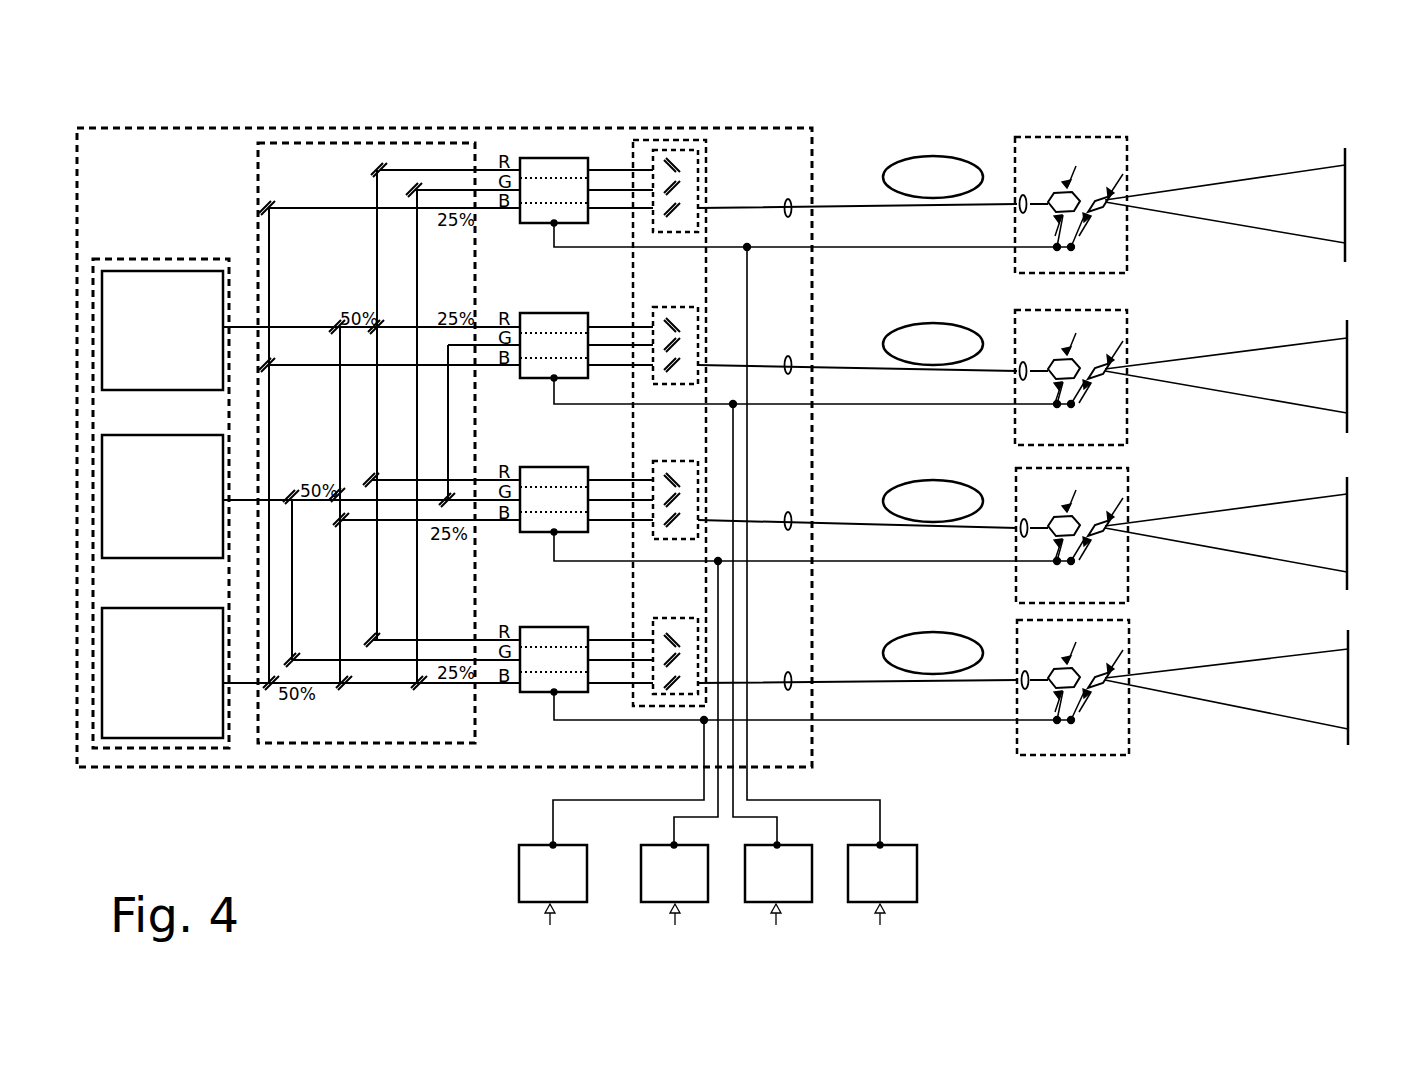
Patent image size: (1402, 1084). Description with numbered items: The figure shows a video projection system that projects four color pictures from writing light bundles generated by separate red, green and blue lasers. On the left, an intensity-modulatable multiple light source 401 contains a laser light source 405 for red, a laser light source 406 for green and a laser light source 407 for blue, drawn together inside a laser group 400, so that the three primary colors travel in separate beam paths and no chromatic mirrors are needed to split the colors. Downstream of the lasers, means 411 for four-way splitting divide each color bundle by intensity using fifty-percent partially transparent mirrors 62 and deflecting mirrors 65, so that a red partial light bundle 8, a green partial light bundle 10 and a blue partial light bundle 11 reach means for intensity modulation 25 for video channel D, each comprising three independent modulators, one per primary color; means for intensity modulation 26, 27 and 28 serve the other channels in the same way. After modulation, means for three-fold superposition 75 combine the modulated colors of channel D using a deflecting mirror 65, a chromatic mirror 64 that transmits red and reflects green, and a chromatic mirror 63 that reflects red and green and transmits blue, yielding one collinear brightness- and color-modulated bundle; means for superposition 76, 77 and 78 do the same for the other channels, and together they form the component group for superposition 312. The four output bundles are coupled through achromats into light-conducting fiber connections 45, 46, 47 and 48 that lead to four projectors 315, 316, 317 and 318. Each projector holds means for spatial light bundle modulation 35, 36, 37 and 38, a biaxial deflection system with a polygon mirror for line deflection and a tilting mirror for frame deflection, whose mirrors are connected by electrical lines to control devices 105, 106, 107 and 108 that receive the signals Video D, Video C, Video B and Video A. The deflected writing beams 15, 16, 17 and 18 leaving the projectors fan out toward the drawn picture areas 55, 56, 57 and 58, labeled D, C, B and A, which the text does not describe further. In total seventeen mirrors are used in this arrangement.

The laser light source unit 400 is at (140, 259).
The laser light source 405 is at (174, 330).
The laser light source 406 is at (175, 496).
The laser light source 407 is at (174, 673).
The means for four-way splitting 411 is at (280, 143).
The multiple light source 401 is at (815, 147).
The red partial light bundle 8 is at (453, 169).
The green partial light bundle 10 is at (490, 189).
The blue partial light bundle 11 is at (489, 210).
The means for intensity modulation 25 is at (524, 224).
The means for intensity modulation 26 is at (524, 379).
The means for intensity modulation 27 is at (524, 533).
The means for intensity modulation 28 is at (524, 693).
The partially transparent mirror 62 is at (445, 497).
The deflecting mirror 65 is at (413, 193).
The chromatic mirror 64 is at (684, 187).
The chromatic mirror 63 is at (684, 210).
The component group for superposition 312 is at (706, 152).
The means for three-fold superposition 75 is at (655, 233).
The means for superposition 76 is at (655, 385).
The means for superposition 77 is at (655, 540).
The means for superposition 78 is at (655, 695).
The light-conducting fiber connection 45 is at (936, 158).
The light-conducting fiber connection 46 is at (936, 325).
The light-conducting fiber connection 47 is at (936, 481).
The light-conducting fiber connection 48 is at (936, 633).
The projector 315 is at (1126, 150).
The projector 316 is at (1126, 323).
The projector 317 is at (1126, 480).
The projector 318 is at (1126, 632).
The means for spatial light bundle modulation 35 is at (1112, 185).
The means for spatial light bundle modulation 36 is at (1112, 352).
The means for spatial light bundle modulation 37 is at (1112, 509).
The means for spatial light bundle modulation 38 is at (1112, 662).
The scanned light beam 15 is at (1265, 175).
The scanned light beam 16 is at (1265, 345).
The scanned light beam 17 is at (1265, 500).
The scanned light beam 18 is at (1265, 655).
The screen D 55 is at (1345, 150).
The screen C 56 is at (1347, 322).
The screen B 57 is at (1347, 478).
The screen A 58 is at (1348, 632).
The control device 105 is at (849, 601).
The control device 106 is at (782, 680).
The control device 107 is at (667, 758).
The control device 108 is at (603, 838).